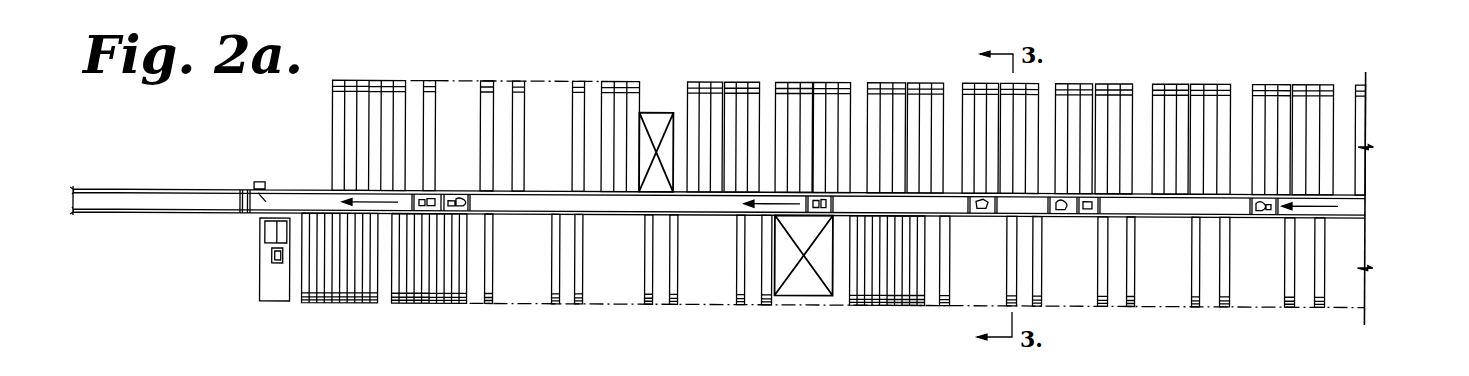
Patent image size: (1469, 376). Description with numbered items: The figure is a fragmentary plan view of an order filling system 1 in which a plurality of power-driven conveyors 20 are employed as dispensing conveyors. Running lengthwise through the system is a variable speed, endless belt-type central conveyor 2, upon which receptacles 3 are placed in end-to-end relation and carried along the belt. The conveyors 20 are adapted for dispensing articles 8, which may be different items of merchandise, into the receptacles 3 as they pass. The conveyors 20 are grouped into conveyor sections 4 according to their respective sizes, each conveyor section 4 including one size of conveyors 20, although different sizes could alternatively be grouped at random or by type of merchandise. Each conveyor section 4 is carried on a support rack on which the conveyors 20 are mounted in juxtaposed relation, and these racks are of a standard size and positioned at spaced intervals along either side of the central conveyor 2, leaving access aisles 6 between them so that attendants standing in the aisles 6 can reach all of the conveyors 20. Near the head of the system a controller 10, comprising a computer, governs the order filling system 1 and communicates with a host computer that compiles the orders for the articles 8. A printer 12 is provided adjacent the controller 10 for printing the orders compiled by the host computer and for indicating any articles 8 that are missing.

The order filling system 1 is at (252, 132).
The central conveyor 2 is at (132, 203).
The receptacles 3 is at (447, 196).
The conveyor sections 4 is at (486, 303).
The access aisles 6 is at (497, 89).
The articles 8 is at (1068, 211).
The controller 10 is at (262, 233).
The printer 12 is at (270, 256).
The power-driven conveyors 20 is at (748, 88).